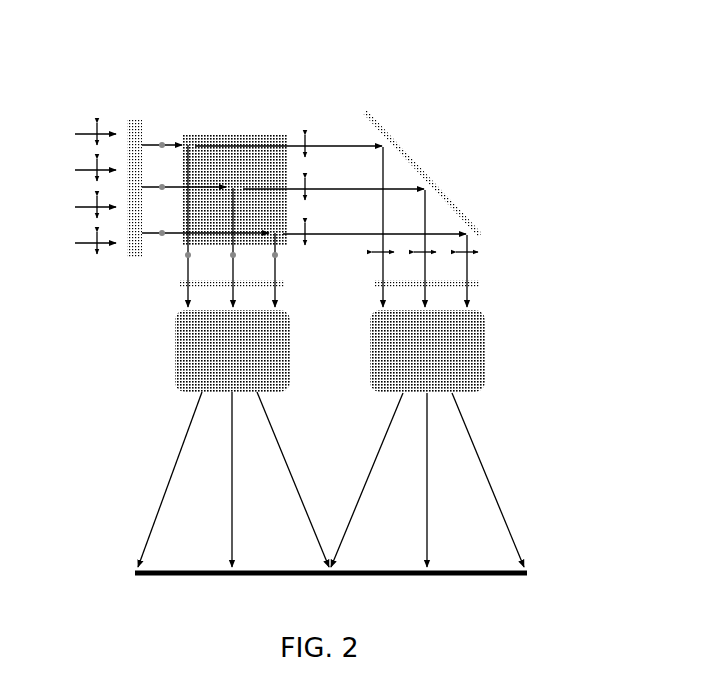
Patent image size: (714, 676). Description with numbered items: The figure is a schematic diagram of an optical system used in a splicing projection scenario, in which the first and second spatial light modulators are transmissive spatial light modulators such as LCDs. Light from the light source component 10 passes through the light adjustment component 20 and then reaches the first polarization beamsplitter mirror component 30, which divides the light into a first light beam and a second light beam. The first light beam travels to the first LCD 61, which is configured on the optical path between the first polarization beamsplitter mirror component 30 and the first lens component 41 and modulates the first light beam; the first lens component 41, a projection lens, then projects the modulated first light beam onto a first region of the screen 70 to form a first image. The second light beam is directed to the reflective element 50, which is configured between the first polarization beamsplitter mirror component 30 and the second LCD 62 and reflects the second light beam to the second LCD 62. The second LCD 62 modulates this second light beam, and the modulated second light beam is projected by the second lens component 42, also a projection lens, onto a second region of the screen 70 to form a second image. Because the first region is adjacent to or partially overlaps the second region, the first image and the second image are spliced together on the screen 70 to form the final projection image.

The light source component 10 is at (85, 122).
The light adjustment component 20 is at (140, 123).
The first polarization beamsplitter mirror component 30 is at (212, 132).
The first lens component 41 is at (175, 353).
The second lens component 42 is at (485, 352).
The reflective element 50 is at (378, 132).
The first LCD 61 is at (180, 283).
The second LCD 62 is at (480, 283).
The screen 70 is at (530, 573).